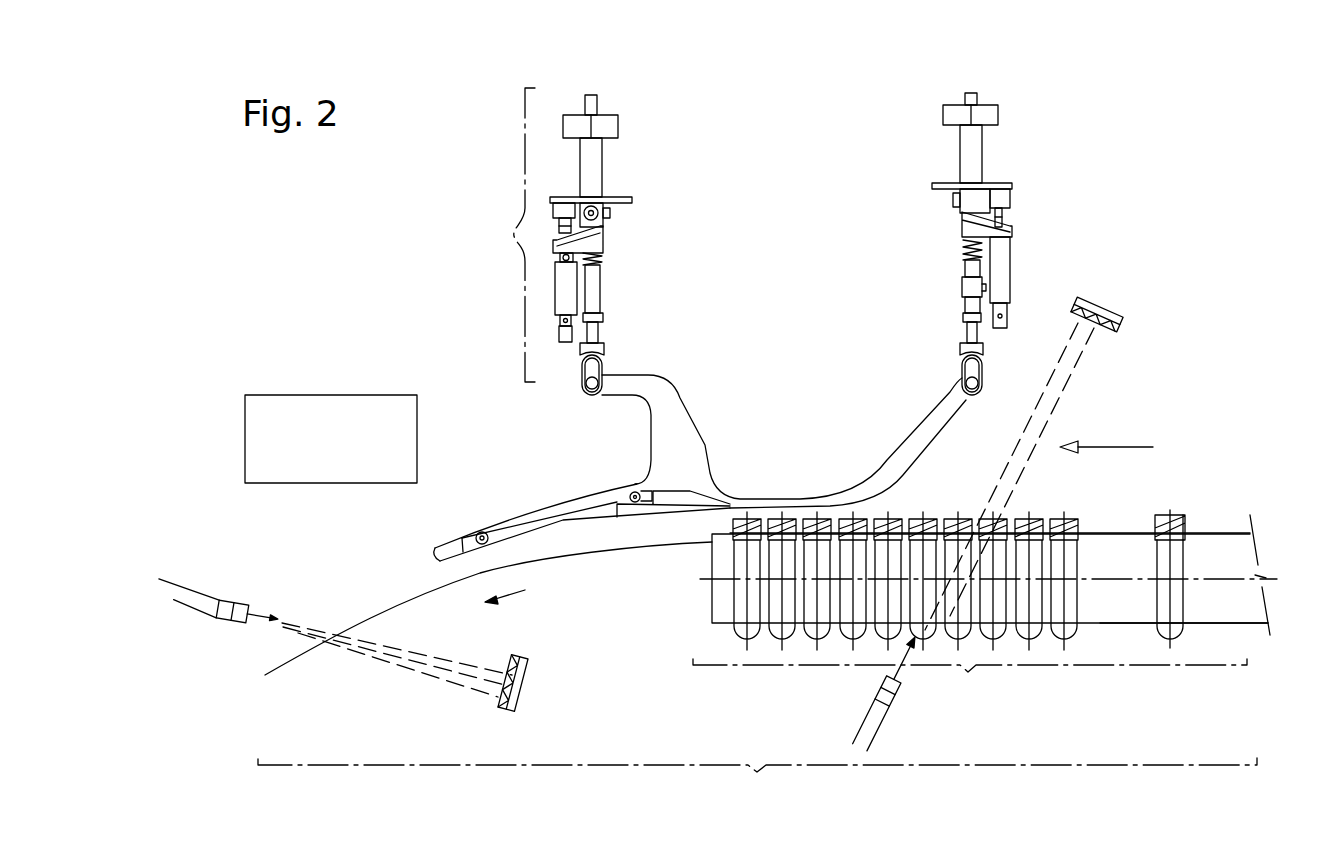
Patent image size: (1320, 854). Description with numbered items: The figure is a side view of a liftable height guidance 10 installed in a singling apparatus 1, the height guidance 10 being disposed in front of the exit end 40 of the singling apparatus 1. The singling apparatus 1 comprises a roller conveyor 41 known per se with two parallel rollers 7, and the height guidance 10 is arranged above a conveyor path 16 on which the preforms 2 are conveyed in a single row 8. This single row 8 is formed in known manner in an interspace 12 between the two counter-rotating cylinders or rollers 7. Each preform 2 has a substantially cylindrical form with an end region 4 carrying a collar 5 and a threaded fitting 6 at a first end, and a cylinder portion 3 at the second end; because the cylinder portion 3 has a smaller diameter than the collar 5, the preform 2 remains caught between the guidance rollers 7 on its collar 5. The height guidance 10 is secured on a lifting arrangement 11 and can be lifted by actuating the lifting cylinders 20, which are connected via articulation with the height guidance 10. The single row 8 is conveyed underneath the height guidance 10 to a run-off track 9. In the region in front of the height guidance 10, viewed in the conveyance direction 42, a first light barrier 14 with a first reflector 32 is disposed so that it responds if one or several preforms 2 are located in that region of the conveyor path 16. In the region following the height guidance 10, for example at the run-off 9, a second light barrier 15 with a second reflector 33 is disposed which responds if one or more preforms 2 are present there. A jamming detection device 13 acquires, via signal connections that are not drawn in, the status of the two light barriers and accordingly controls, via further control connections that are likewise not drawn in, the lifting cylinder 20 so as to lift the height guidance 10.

The singling apparatus 1 is at (1305, 433).
The roller conveyor 41 is at (945, 597).
The preforms 2 is at (1160, 567).
The cylinder portion 3 is at (1187, 622).
The end region 4 is at (1160, 516).
The collar 5 is at (1187, 541).
The threaded fitting 6 is at (1184, 535).
The rollers 7 is at (1243, 622).
The single row 8 is at (1025, 668).
The run-off track 9 is at (558, 558).
The liftable height guidance 10 is at (683, 450).
The lifting arrangement 11 is at (517, 211).
The interspace 12 is at (1238, 528).
The jamming detection device 13 is at (328, 435).
The first light barrier 14 is at (879, 697).
The second light barrier 15 is at (208, 602).
The conveyor path 16 is at (700, 763).
The lifting cylinders 20 is at (563, 285).
The first reflector 32 is at (1103, 307).
The second reflector 33 is at (498, 703).
The exit end 40 is at (690, 583).
The conveyance direction 42 is at (1097, 445).